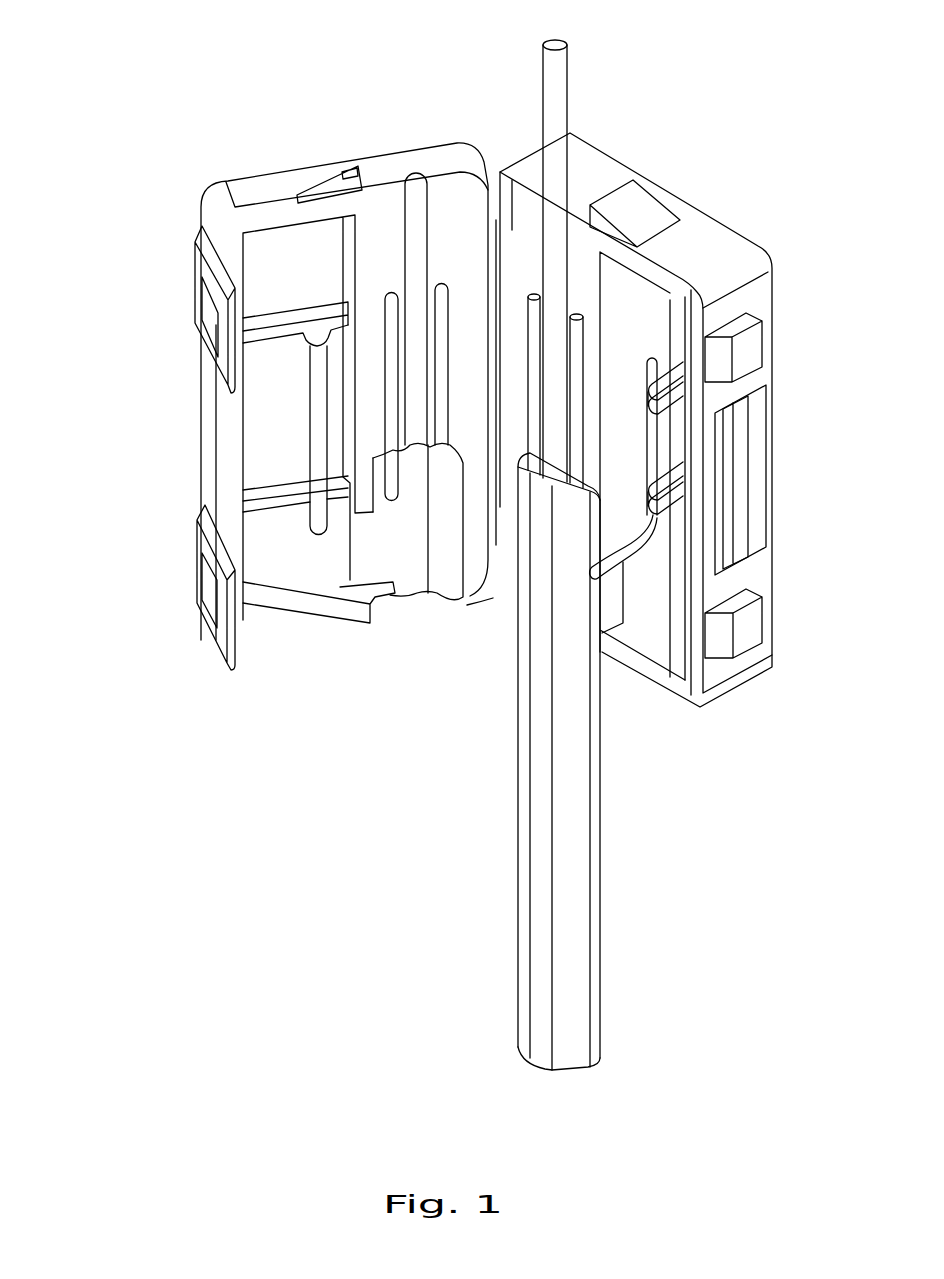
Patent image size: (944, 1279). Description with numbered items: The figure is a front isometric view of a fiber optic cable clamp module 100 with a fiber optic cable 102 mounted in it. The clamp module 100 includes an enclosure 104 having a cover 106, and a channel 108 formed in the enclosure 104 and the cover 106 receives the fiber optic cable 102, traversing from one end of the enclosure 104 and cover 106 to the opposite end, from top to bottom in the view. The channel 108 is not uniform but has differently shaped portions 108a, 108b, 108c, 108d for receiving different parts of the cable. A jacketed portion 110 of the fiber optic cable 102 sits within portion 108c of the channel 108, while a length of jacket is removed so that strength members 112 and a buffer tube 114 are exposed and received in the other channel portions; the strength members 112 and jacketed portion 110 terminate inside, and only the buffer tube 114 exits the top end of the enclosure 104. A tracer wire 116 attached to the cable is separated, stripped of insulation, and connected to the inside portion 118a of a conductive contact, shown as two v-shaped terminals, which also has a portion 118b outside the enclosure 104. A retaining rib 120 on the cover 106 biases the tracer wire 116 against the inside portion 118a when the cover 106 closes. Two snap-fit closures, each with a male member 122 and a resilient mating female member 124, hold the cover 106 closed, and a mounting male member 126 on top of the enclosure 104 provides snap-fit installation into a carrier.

The fiber optic cable clamp module 100 is at (222, 100).
The fiber optic cable 102 is at (645, 937).
The enclosure 104 is at (735, 233).
The cover 106 is at (383, 153).
The channel 108 is at (542, 193).
The channel portion 108a is at (417, 263).
The channel portion 108b is at (440, 347).
The channel portion 108c is at (410, 577).
The channel portion 108d is at (390, 345).
The jacketed portion 110 is at (540, 563).
The strength members 112 is at (535, 322).
The buffer tube 114 is at (553, 77).
The tracer wire 116 is at (603, 567).
The inside portion of conductive contact 118a is at (660, 497).
The outside portion of conductive contact 118b is at (755, 477).
The retaining rib 120 is at (327, 533).
The male member 122 is at (752, 353).
The female member 124 is at (196, 578).
The mounting male member 126 is at (642, 213).